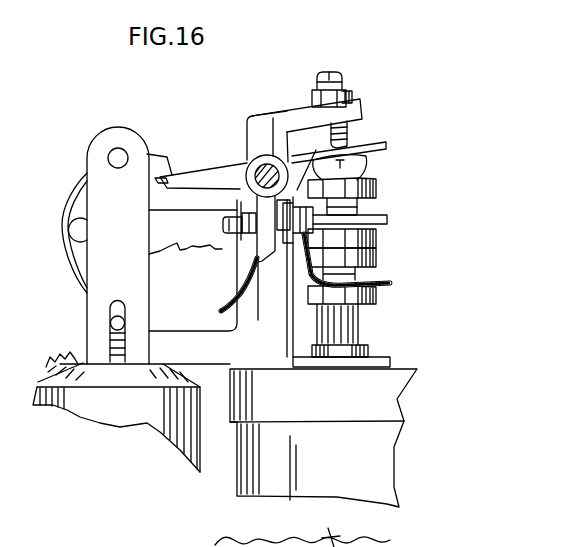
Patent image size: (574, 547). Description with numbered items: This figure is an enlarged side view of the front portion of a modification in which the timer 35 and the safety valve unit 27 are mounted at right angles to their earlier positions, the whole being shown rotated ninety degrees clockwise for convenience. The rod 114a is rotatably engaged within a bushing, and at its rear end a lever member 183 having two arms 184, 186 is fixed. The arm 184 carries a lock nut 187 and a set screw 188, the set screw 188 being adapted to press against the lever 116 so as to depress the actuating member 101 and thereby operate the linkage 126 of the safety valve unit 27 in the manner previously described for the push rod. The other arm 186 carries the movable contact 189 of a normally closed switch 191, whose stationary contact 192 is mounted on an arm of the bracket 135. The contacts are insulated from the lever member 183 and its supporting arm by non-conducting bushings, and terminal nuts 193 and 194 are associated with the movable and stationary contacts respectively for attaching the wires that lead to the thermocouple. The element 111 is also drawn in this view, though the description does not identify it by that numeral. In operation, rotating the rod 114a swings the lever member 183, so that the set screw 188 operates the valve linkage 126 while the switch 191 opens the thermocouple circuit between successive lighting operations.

The safety valve unit 27 is at (112, 438).
The timer 35 is at (249, 502).
The actuating member 101 is at (343, 214).
The support plate 111 is at (185, 235).
The rod 114a is at (257, 172).
The lever 116 is at (369, 141).
The linkage 126 is at (207, 161).
The bracket 135 is at (200, 343).
The lever member 183 is at (248, 119).
The arm 184 is at (353, 113).
The arm 186 is at (267, 243).
The lock nut 187 is at (348, 98).
The set screw 188 is at (332, 72).
The movable contact 189 is at (262, 228).
The switch 191 is at (305, 288).
The stationary contact 192 is at (260, 323).
The terminal nut 193 is at (243, 205).
The terminal nut 194 is at (362, 204).